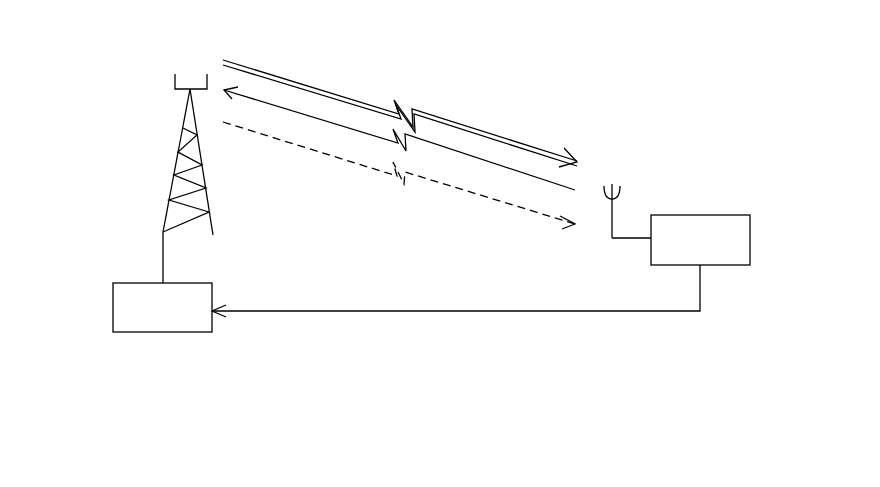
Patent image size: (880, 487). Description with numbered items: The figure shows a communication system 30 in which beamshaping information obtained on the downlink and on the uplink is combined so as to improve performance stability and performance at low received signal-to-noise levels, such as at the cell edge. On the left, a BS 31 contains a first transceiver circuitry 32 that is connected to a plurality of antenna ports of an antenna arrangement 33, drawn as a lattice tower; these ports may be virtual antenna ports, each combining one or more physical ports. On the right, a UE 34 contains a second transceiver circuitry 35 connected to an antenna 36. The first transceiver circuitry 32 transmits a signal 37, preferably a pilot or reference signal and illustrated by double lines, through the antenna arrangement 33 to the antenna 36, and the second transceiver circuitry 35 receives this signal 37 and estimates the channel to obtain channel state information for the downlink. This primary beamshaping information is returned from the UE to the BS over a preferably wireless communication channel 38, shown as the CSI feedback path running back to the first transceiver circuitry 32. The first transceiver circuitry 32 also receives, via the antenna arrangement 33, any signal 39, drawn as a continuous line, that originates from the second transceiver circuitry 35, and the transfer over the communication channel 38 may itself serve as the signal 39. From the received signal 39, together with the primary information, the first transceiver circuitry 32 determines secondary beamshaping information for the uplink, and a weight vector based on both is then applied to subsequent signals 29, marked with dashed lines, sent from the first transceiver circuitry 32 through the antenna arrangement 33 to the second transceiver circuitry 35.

The signals 29 is at (481, 195).
The communication system 30 is at (668, 74).
The BS 31 is at (94, 117).
The first transceiver circuitry 32 is at (122, 305).
The antenna arrangement 33 is at (191, 80).
The UE 34 is at (733, 156).
The second transceiver circuitry 35 is at (666, 253).
The antenna 36 is at (613, 188).
The signal 37 is at (429, 109).
The communication channel 38 is at (456, 291).
The signal 39 is at (487, 159).